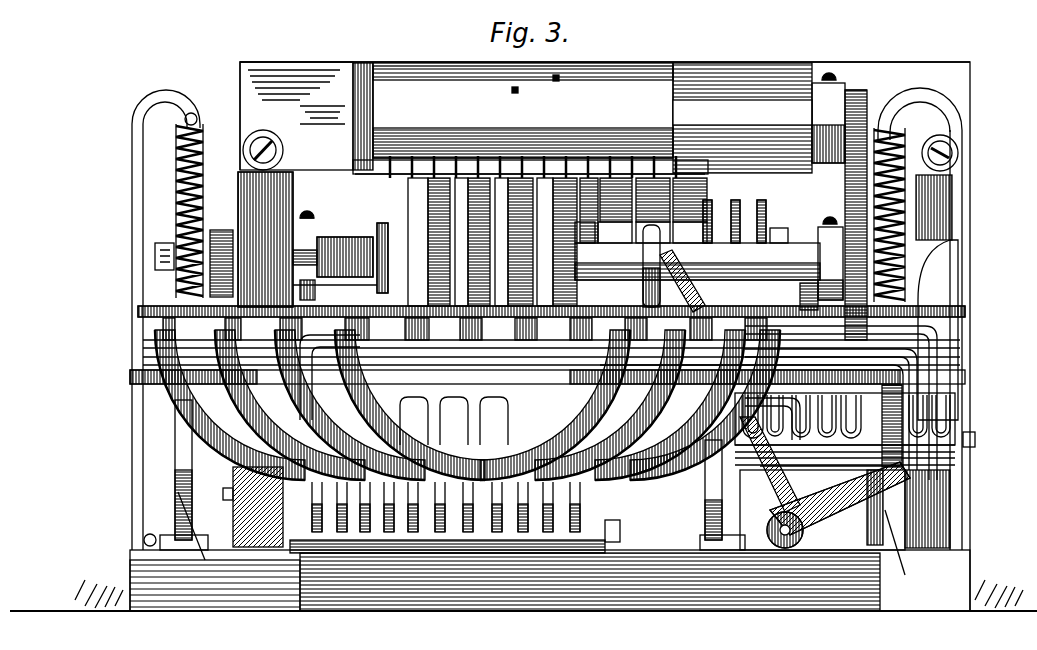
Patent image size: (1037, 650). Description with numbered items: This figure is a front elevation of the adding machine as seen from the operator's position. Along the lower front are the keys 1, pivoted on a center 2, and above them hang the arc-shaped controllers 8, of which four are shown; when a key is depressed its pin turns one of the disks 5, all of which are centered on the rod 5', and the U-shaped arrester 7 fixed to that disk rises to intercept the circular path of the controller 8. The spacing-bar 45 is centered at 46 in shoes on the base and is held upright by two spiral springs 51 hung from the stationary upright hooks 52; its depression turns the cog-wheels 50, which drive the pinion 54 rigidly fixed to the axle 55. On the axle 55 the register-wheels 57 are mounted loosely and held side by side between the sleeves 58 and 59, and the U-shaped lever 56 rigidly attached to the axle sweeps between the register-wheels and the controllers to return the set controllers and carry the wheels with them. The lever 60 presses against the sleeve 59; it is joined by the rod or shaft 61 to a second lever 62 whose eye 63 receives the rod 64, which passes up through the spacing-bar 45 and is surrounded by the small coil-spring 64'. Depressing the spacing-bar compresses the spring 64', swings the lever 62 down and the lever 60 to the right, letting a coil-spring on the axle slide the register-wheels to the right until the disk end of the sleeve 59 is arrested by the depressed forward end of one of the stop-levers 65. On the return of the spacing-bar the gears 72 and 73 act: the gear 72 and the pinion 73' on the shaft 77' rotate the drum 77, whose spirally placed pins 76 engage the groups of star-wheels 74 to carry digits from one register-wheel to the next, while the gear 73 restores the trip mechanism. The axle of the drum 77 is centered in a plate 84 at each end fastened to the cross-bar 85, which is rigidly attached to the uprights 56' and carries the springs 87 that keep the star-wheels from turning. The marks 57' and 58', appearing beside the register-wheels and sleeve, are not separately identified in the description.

The keys 1 is at (176, 400).
The center 2 is at (224, 490).
The disk 5 is at (847, 481).
The rod 5' is at (981, 443).
The arresters 7 is at (980, 373).
The controllers 8 is at (641, 232).
The spacing-bar 45 is at (143, 400).
The center 46 is at (529, 544).
The cog-wheels 50 is at (132, 357).
The spiral springs 51 is at (200, 158).
The upright hooks 52 is at (186, 104).
The pinion 54 is at (222, 232).
The axle 55 is at (360, 240).
The U-shaped lever 56 is at (265, 239).
The uprights 56' is at (963, 330).
The register-wheels 57 is at (557, 272).
The disc 57' is at (386, 248).
The sleeve 58 is at (335, 294).
The screw 58' is at (320, 204).
The sleeve 59 is at (697, 261).
The lever 60 is at (735, 520).
The rod or shaft 61 is at (798, 548).
The lever 62 is at (840, 498).
The eye 63 is at (878, 472).
The rod 64 is at (864, 426).
The coil-spring 64' is at (940, 398).
The stop-levers 65 is at (712, 204).
The gear 72 is at (845, 193).
The gear 73 is at (828, 118).
The pinion 73' is at (874, 88).
The star-wheels 74 is at (390, 176).
The pins 76 is at (478, 128).
The drum 77 is at (523, 110).
The shaft 77' is at (742, 118).
The plate 84 is at (628, 66).
The cross-bar 85 is at (296, 116).
The springs 87 is at (370, 173).